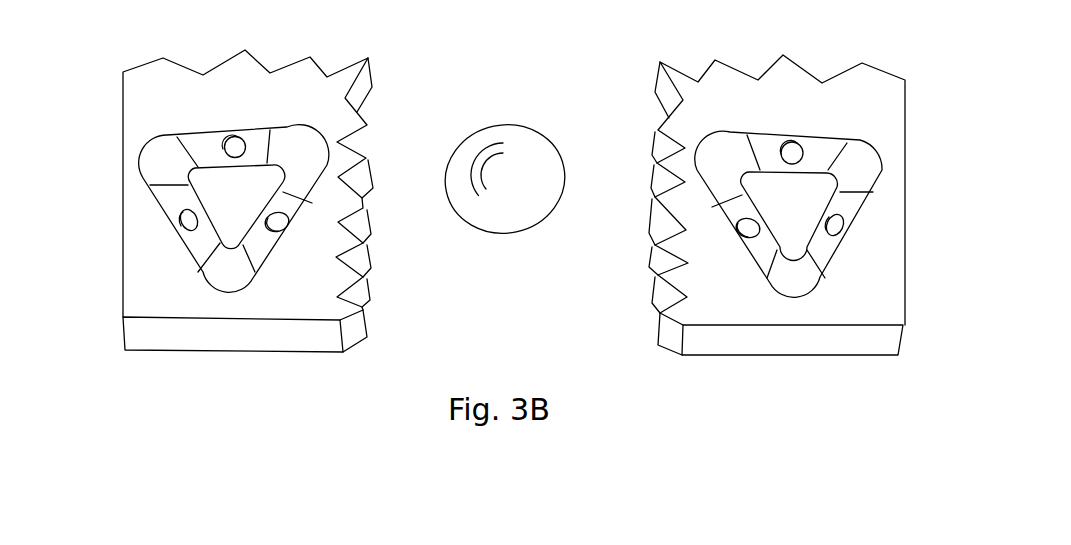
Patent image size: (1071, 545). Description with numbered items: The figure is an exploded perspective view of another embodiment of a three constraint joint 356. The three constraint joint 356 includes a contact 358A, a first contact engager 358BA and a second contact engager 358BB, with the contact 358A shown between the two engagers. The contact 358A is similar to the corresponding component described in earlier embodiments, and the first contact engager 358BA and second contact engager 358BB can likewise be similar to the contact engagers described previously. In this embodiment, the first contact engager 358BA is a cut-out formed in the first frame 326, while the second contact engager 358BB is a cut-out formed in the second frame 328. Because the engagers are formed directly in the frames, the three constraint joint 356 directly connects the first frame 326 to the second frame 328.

The first frame 326 is at (135, 93).
The second frame 328 is at (892, 98).
The three constraint joint 356 is at (610, 45).
The contact 358A is at (499, 133).
The first contact engager 358BA is at (260, 147).
The second contact engager 358BB is at (766, 152).